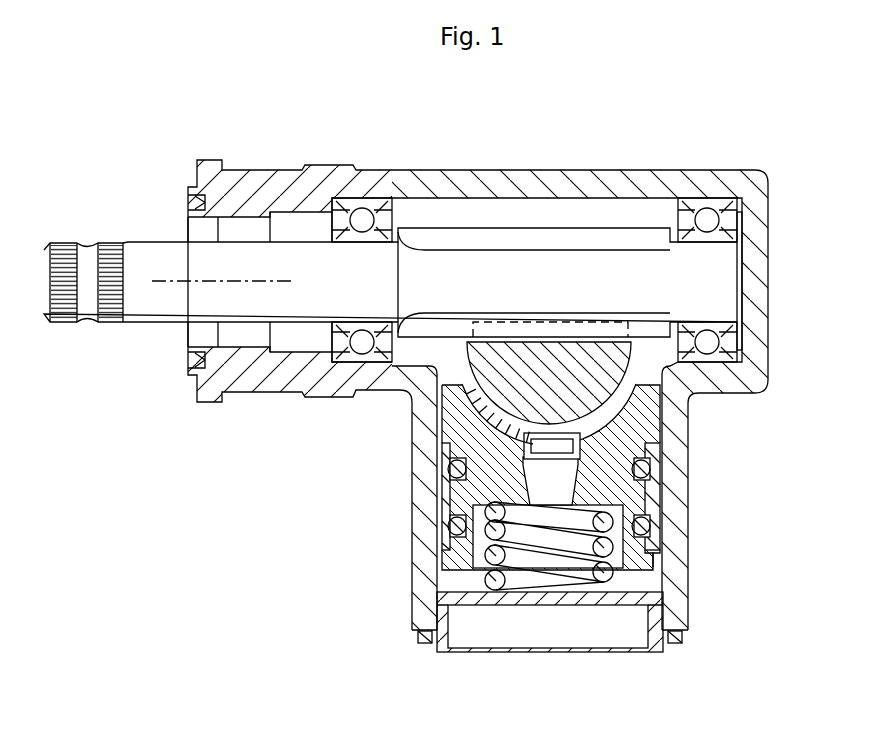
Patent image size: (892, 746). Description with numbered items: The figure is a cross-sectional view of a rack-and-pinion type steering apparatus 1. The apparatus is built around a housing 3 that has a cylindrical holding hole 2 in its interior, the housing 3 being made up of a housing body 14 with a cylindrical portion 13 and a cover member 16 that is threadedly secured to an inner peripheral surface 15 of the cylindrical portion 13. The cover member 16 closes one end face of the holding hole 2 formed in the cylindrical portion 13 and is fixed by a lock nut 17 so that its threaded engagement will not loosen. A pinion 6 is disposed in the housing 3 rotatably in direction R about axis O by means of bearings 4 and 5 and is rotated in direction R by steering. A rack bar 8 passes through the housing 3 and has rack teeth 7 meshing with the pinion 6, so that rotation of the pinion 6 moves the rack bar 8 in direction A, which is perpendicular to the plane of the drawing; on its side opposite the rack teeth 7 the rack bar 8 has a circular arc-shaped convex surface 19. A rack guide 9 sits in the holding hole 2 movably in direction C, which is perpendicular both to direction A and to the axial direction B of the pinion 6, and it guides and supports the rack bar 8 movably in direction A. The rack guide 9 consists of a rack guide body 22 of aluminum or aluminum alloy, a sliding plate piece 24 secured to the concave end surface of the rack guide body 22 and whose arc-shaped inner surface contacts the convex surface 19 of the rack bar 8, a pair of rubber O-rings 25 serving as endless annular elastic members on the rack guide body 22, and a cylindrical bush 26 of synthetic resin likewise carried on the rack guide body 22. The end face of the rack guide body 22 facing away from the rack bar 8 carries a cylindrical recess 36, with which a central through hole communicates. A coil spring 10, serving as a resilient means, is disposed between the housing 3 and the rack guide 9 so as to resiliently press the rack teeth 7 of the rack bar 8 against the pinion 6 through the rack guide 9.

The rack-and-pinion type steering apparatus 1 is at (787, 193).
The cylindrical holding hole 2 is at (652, 587).
The housing 3 is at (778, 306).
The bearing 4 is at (345, 205).
The bearing 5 is at (725, 205).
The pinion 6 is at (530, 262).
The rack teeth 7 is at (573, 322).
The rack bar 8 is at (493, 357).
The rack guide 9 is at (655, 460).
The coil spring 10 is at (475, 562).
The cylindrical portion 13 is at (420, 430).
The housing body 14 is at (656, 185).
The inner peripheral surface 15 is at (447, 597).
The cover member 16 is at (547, 602).
The lock nut 17 is at (415, 640).
The circular arc-shaped convex surface 19 is at (637, 411).
The rack guide body 22 is at (603, 485).
The sliding plate piece 24 is at (468, 398).
The O-rings 25 is at (450, 470).
The cylindrical bush 26 is at (440, 537).
The cylindrical recess 36 is at (648, 560).